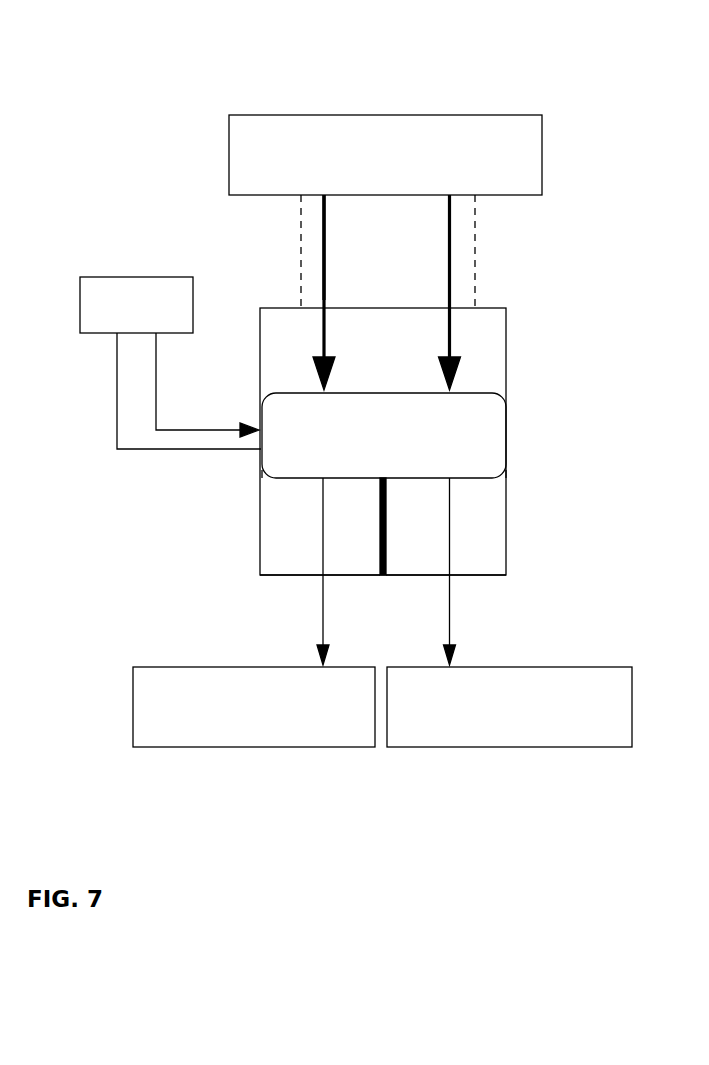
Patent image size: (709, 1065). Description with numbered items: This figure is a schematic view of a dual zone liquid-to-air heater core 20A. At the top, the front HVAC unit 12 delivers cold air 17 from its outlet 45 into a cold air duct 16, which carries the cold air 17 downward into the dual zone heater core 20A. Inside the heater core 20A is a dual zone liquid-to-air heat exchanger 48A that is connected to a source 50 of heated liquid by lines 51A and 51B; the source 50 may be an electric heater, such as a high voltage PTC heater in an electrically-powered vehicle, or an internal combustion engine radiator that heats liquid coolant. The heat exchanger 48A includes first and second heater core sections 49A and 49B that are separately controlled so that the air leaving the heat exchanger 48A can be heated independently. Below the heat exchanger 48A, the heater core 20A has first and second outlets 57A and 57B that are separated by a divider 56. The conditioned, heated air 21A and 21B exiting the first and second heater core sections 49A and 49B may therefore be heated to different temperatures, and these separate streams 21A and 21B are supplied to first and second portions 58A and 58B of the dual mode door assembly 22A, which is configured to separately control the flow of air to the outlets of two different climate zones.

The front HVAC unit 12 is at (437, 113).
The cold air duct 16 is at (475, 285).
The cold air 17 is at (328, 242).
The outlet 45 is at (322, 196).
The source of heated liquid 50 is at (153, 276).
The line 51A is at (202, 427).
The line 51B is at (185, 450).
The dual zone heater core 20A is at (520, 372).
The dual zone liquid-to-air heat exchanger 48A is at (480, 432).
The first heater core section 49A is at (297, 480).
The second heater core section 49B is at (473, 480).
The divider 56 is at (388, 553).
The first outlet 57A is at (288, 553).
The second outlet 57B is at (480, 548).
The conditioned air 21A is at (322, 605).
The conditioned air 21B is at (450, 602).
The dual mode door assembly 22A is at (405, 717).
The first portion of dual mode door assembly 58A is at (268, 748).
The second portion of dual mode door assembly 58B is at (483, 748).